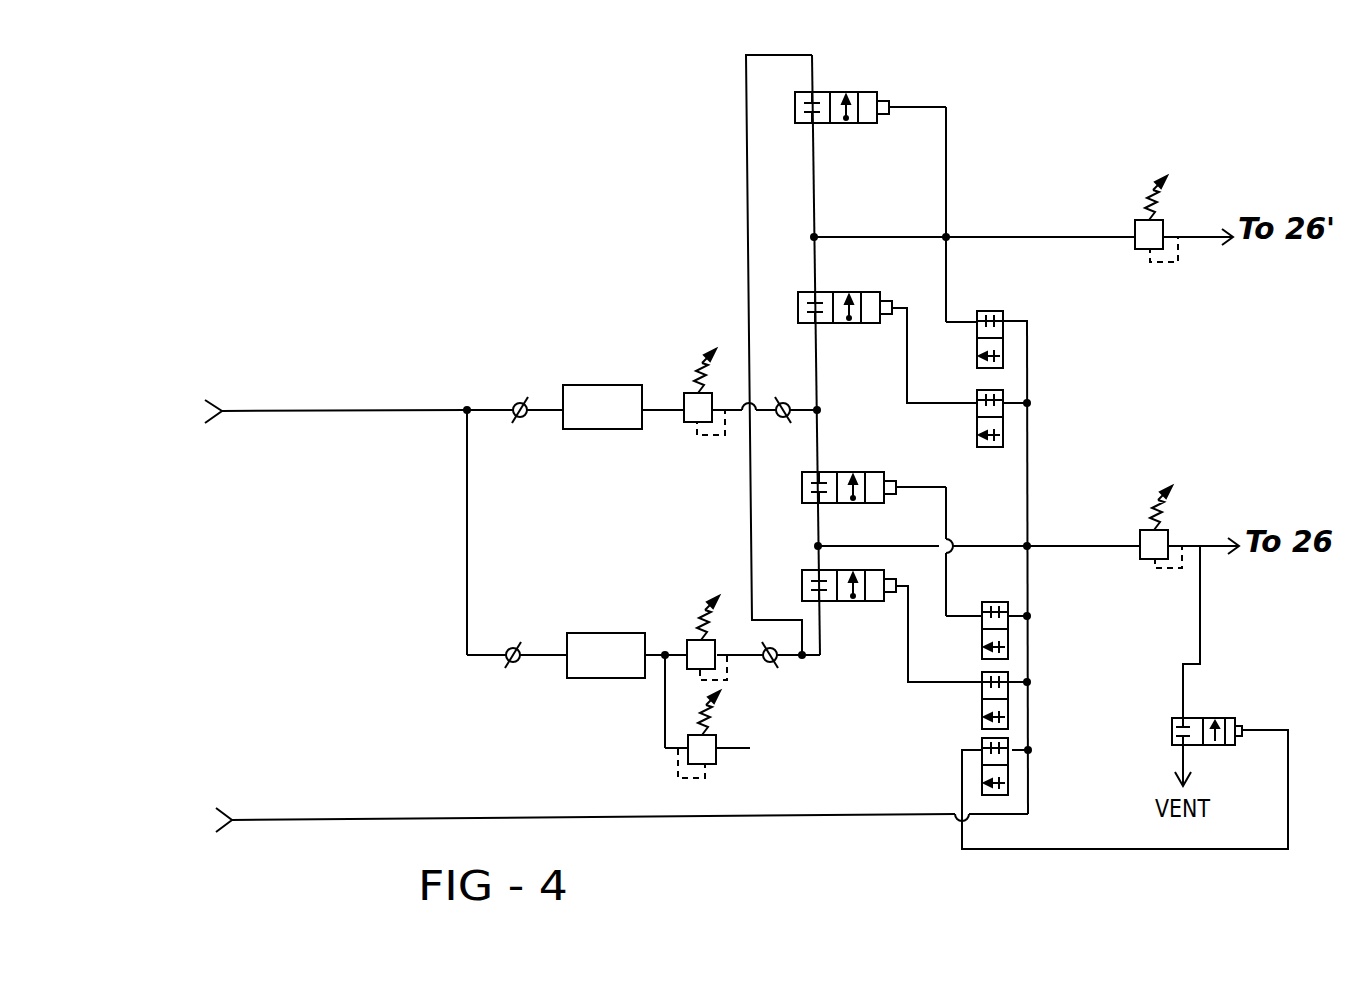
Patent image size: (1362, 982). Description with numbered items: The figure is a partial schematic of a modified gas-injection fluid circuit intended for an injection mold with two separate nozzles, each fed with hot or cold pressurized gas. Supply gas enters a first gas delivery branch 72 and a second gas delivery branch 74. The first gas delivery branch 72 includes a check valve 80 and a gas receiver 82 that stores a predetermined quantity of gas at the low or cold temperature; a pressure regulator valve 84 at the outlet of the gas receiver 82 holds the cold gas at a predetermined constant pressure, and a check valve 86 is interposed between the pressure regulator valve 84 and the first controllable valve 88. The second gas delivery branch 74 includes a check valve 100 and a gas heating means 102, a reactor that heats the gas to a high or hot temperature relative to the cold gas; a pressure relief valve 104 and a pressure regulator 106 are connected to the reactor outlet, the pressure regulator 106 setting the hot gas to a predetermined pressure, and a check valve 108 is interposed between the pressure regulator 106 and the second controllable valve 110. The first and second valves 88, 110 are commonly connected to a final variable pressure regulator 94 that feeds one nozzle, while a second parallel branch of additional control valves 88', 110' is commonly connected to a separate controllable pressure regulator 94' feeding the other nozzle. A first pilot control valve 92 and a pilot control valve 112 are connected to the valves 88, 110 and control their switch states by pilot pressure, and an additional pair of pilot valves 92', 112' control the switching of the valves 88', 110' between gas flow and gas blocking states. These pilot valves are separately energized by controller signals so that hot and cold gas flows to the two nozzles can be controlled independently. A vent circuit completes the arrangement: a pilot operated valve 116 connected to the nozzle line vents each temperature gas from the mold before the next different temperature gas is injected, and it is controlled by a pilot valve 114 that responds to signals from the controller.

The first gas delivery branch 72 is at (478, 410).
The second gas delivery branch 74 is at (467, 558).
The check valve 80 is at (520, 417).
The gas receiver 82 is at (600, 415).
The pressure regulator valve 84 is at (686, 395).
The check valve 86 is at (783, 398).
The first controllable valve 88 is at (874, 463).
The additional control valve 88' is at (870, 80).
The first pilot control valve 92 is at (1042, 616).
The pilot valve 92' is at (1032, 325).
The final variable pressure regulator 94 is at (1147, 519).
The controllable pressure regulator 94' is at (1132, 201).
The check valve 100 is at (513, 665).
The gas heating means 102 is at (620, 672).
The pressure relief valve 104 is at (718, 758).
The pressure regulator 106 is at (692, 641).
The check valve 108 is at (777, 662).
The second controllable valve 110 is at (854, 609).
The additional control valve 110' is at (846, 288).
The pilot control valve 112 is at (1046, 700).
The pilot valve 112' is at (1049, 421).
The pilot valve 114 is at (1007, 792).
The pilot operated valve 116 is at (1228, 718).